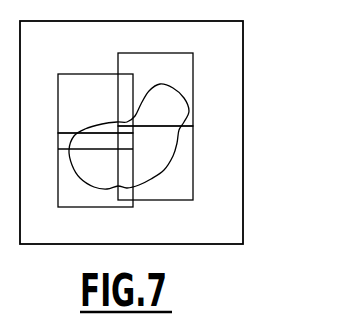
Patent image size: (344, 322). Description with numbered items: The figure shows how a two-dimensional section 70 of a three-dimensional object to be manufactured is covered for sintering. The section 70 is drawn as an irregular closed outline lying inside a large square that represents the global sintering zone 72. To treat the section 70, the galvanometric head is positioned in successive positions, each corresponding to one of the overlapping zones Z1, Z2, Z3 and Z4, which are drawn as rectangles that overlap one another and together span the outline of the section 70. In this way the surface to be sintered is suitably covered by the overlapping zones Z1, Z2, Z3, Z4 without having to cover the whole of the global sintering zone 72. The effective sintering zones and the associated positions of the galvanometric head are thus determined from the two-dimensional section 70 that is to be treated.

The two-dimensional section 70 is at (193, 112).
The global sintering zone 72 is at (243, 91).
The overlapping zone Z1 is at (95, 111).
The overlapping zone Z2 is at (95, 170).
The overlapping zone Z3 is at (155, 89).
The overlapping zone Z4 is at (155, 163).